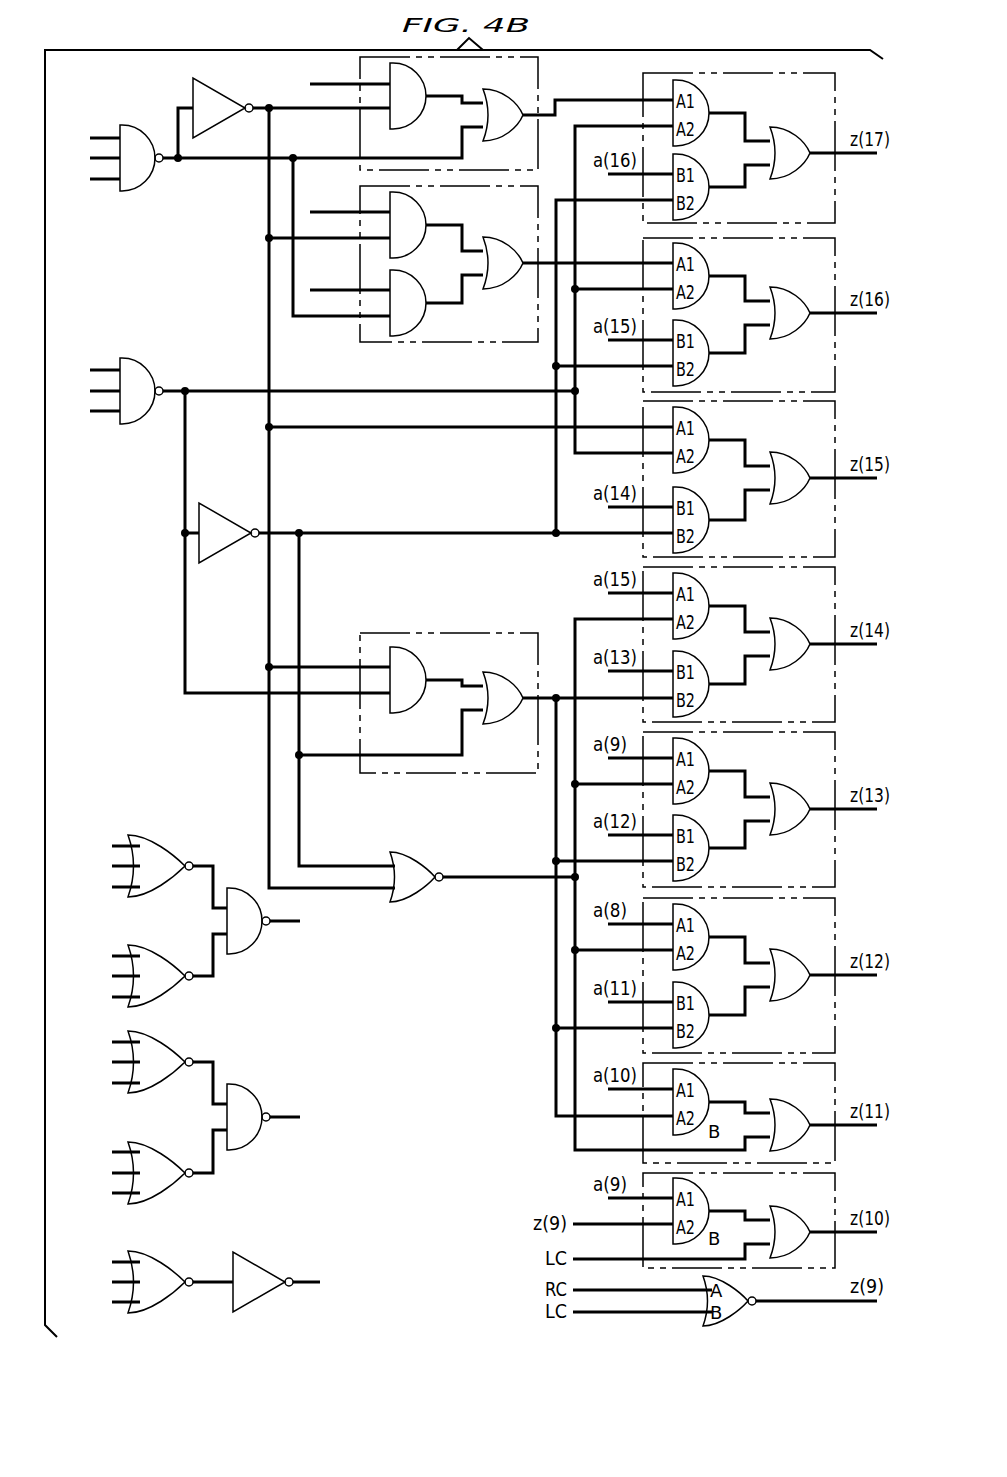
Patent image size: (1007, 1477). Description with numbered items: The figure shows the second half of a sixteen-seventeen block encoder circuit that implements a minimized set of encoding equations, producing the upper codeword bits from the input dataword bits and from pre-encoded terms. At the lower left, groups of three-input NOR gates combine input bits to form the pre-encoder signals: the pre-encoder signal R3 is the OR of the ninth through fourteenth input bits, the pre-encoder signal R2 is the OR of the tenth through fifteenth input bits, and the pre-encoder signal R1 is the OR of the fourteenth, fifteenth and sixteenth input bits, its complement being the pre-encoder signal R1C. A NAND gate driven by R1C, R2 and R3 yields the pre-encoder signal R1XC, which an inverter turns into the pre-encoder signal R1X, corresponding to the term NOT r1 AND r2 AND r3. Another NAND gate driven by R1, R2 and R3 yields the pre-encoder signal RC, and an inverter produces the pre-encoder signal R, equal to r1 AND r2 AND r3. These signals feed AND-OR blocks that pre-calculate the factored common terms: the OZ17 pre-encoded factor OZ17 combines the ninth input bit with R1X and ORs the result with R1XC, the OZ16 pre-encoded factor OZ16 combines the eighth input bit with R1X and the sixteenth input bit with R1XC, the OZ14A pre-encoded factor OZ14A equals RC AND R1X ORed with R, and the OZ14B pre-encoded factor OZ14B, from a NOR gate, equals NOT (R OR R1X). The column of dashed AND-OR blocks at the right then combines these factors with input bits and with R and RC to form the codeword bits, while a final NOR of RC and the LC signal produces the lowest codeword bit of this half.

The OZ17 pre-encoded factor OZ17 is at (491, 113).
The OZ16 pre-encoded factor OZ16 is at (530, 260).
The OZ14A pre-encoded factor OZ14A is at (556, 830).
The OZ14B pre-encoded factor OZ14B is at (580, 884).
The pre-encoder signal R1X is at (425, 483).
The pre-encoder signal R1XC is at (270, 220).
The pre-encoder signal RC is at (322, 525).
The pre-encoder signal R is at (379, 684).
The pre-encoder signal R3 is at (183, 920).
The pre-encoder signal R2 is at (183, 1116).
The pre-encoder signal R1C is at (149, 1281).
The pre-encoder signal R1 is at (276, 1282).